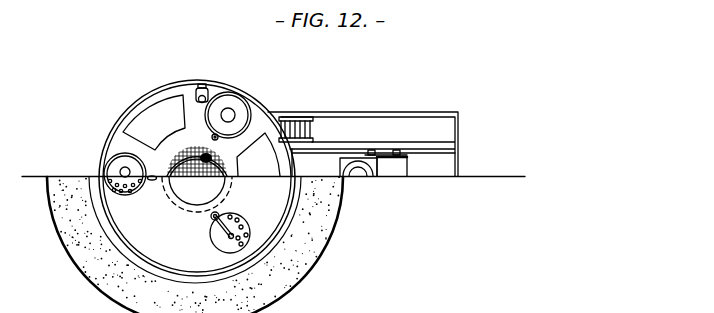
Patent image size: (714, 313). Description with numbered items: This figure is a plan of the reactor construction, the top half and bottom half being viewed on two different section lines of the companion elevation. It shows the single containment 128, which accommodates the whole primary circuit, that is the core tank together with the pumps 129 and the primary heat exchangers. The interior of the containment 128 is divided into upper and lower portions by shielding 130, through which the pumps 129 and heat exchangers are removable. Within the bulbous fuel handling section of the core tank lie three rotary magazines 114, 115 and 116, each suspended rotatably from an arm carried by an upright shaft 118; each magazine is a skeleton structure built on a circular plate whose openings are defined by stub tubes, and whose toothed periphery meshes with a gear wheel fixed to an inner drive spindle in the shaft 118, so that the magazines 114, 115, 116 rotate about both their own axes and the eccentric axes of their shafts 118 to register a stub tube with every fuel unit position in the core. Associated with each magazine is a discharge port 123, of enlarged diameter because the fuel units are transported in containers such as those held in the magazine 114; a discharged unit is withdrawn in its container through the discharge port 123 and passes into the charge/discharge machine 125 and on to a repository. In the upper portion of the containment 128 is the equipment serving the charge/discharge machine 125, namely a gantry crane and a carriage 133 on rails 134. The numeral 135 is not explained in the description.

The containment 128 is at (178, 79).
The shielding 130 is at (123, 145).
The openings 135 is at (160, 110).
The discharge port 123 is at (208, 101).
The pumps 129 is at (236, 107).
The rotary magazine 114 is at (126, 191).
The upright shaft 118 is at (211, 218).
The rotary magazine 115 is at (238, 245).
The rotary magazine 116 is at (256, 111).
The rails 134 is at (427, 154).
The charge/discharge machine 125 is at (358, 172).
The carriage 133 is at (392, 168).